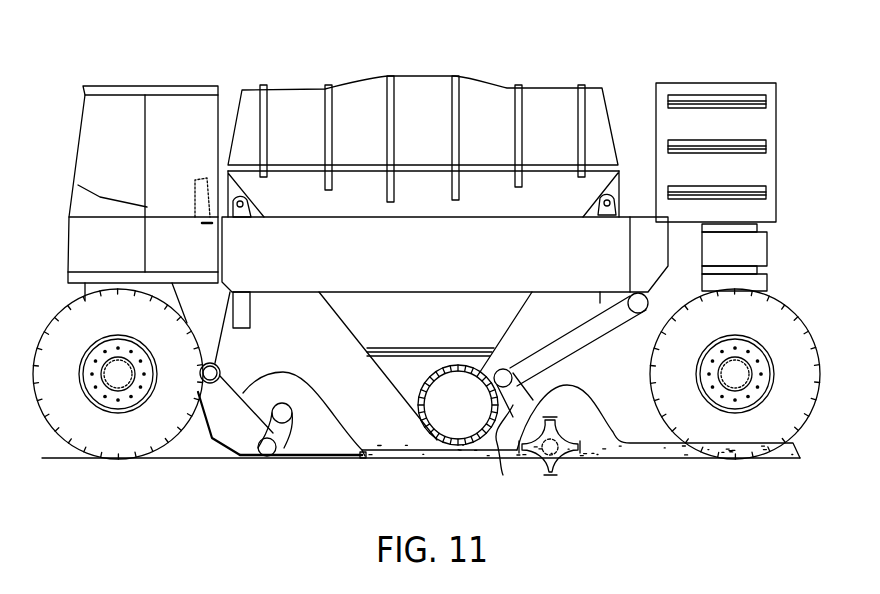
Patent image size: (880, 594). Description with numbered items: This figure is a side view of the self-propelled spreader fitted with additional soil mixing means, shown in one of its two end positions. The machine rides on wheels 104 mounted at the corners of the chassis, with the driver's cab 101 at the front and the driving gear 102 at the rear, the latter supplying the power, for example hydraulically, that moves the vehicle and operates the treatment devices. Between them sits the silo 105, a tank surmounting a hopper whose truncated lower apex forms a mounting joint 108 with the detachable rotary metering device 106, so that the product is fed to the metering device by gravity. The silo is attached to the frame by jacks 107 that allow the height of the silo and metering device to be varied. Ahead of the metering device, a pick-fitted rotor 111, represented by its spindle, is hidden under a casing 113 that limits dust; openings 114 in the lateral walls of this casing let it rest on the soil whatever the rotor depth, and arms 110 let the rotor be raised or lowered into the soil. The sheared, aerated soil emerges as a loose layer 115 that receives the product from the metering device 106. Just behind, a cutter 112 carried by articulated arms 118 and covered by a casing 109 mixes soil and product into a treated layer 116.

The cab 101 is at (93, 147).
The driving gear 102 is at (718, 125).
The wheels 104 is at (762, 323).
The silo 105 is at (500, 98).
The rotary metering device 106 is at (437, 403).
The jacks 107 is at (238, 315).
The mounting joint 108 is at (390, 357).
The casing 109 is at (580, 400).
The arms 110 is at (220, 414).
The rotor 111 is at (262, 457).
The cutter 112 is at (562, 460).
The casing 113 is at (345, 436).
The openings 114 is at (282, 424).
The loose layer 115 is at (452, 457).
The treated layer 116 is at (787, 452).
The arms 118 is at (495, 453).